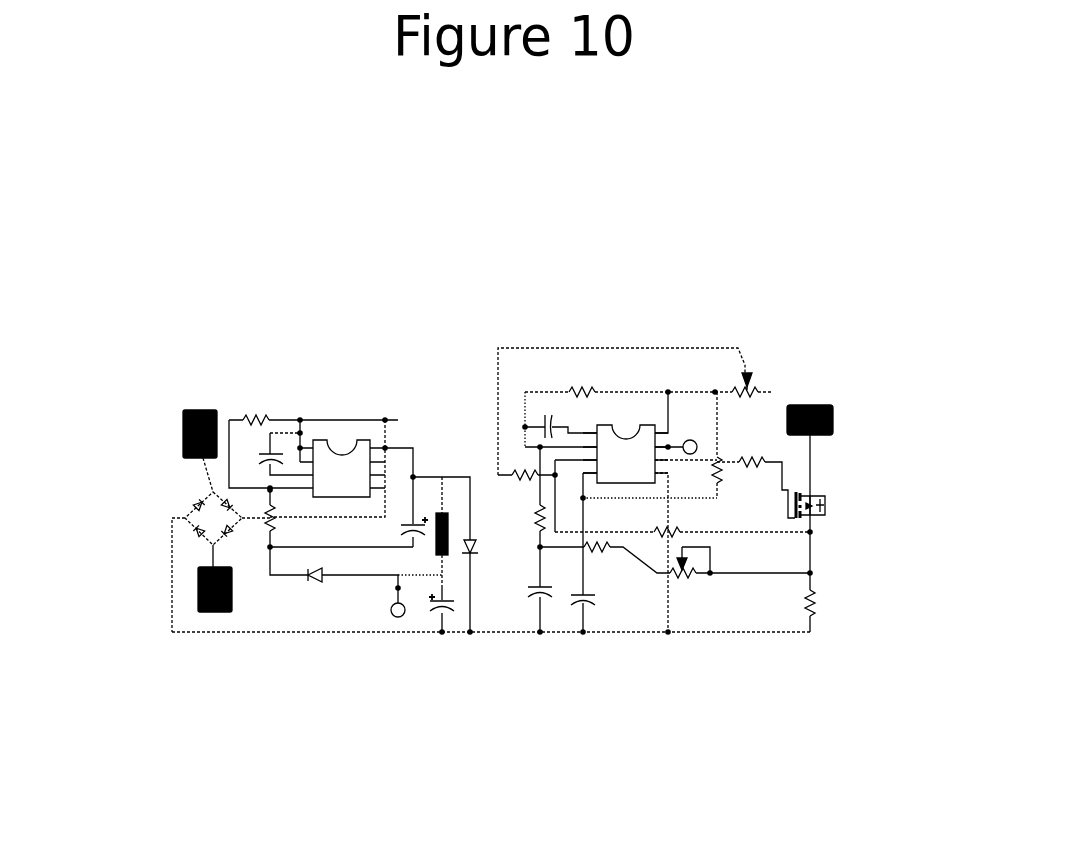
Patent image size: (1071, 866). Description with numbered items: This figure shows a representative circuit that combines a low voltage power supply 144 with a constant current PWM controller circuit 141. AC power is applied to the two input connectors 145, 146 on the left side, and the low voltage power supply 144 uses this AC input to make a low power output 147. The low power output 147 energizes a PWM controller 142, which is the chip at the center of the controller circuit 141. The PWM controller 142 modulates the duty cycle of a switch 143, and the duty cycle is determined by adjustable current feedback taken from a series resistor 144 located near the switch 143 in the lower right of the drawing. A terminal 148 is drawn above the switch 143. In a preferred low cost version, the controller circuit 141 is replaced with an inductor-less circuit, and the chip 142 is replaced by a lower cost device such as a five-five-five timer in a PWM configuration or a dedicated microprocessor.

The constant current PWM controller circuit 141 is at (820, 352).
The PWM controller 142 is at (624, 422).
The switch 143 is at (835, 512).
The low voltage power supply 144 is at (468, 405).
The connector 145 is at (182, 440).
The connector 146 is at (197, 593).
The low power output 147 is at (690, 455).
The load terminal 148 is at (845, 408).